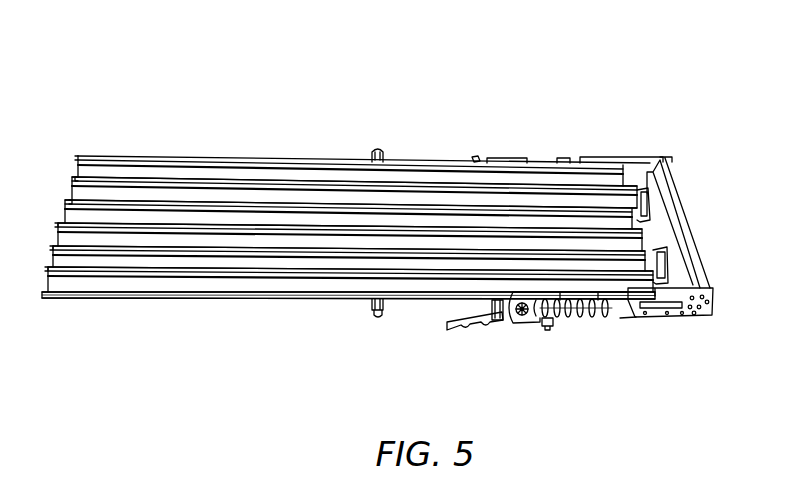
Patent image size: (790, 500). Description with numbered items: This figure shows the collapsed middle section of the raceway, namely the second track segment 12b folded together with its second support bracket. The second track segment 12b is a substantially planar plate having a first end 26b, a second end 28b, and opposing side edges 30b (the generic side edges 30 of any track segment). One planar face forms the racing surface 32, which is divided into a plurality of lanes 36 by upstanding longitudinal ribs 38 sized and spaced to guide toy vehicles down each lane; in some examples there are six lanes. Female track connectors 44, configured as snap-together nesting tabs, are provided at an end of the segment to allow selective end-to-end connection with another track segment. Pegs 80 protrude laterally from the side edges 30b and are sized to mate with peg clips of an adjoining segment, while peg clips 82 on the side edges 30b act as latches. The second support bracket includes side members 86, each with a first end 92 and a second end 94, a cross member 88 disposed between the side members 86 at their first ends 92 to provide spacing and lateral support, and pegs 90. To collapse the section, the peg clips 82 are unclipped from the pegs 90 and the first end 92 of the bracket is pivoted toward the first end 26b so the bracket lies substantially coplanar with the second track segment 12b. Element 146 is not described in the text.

The second track segment 12b is at (142, 65).
The second end 28b is at (52, 197).
The side edges 30 is at (168, 157).
The side edges 30b is at (278, 160).
The racing surface 32 is at (281, 197).
The lanes 36 is at (75, 197).
The upstanding longitudinal ribs 38 is at (48, 268).
The female track connectors 44 is at (665, 255).
The pegs 80 is at (378, 147).
The peg clips 82 is at (448, 322).
The side members 86 is at (533, 160).
The cross member 88 is at (682, 232).
The pegs 90 is at (548, 323).
The first end 92 is at (720, 290).
The second end 94 is at (512, 333).
The slot 146 is at (657, 317).
The first end 26b is at (690, 192).